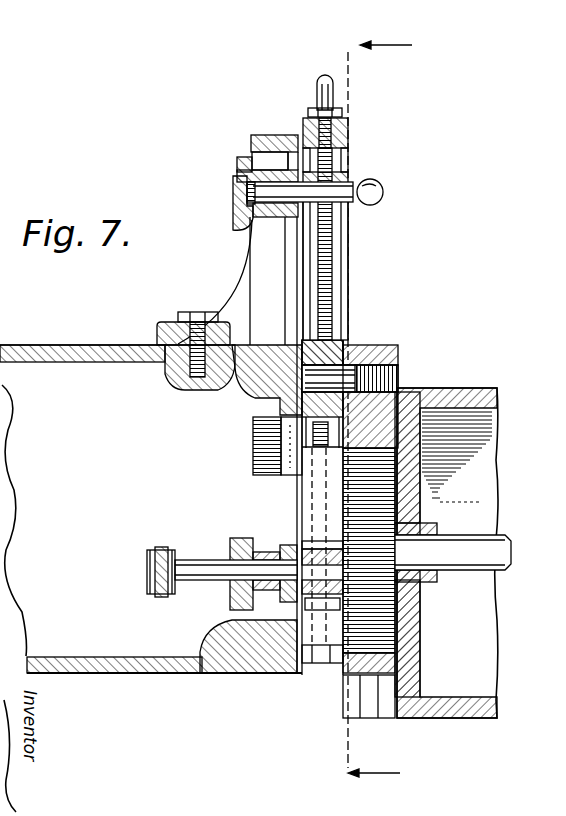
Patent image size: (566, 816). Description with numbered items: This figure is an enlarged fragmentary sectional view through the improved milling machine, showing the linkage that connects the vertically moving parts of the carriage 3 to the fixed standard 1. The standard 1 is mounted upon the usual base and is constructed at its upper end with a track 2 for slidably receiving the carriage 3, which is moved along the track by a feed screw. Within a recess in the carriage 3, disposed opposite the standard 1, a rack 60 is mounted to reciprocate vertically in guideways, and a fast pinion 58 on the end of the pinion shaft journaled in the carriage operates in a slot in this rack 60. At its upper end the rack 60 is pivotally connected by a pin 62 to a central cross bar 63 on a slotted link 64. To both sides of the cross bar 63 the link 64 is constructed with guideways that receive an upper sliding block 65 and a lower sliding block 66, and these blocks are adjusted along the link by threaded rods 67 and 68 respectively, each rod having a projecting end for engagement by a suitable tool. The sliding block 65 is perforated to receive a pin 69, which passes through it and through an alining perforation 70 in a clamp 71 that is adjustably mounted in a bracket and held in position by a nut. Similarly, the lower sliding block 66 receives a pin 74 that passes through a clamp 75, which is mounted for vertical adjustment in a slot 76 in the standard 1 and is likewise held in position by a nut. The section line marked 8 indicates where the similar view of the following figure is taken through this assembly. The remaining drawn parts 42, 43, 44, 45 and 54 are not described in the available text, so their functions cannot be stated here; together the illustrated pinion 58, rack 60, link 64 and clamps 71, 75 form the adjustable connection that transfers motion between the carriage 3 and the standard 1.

The standard 1 is at (14, 348).
The track 2 is at (266, 390).
The carriage 3 is at (490, 390).
The section line 8 is at (371, 415).
The block 42 is at (258, 137).
The block 43 is at (237, 163).
The boss 44 is at (230, 600).
The collar 45 is at (262, 562).
The shaft 54 is at (505, 540).
The pinion 58 is at (395, 594).
The rack 60 is at (370, 345).
The pin 62 is at (400, 368).
The cross bar 63 is at (350, 336).
The slotted link 64 is at (352, 132).
The sliding block 65 is at (352, 178).
The sliding block 66 is at (310, 540).
The threaded rod 67 is at (333, 282).
The threaded rod 68 is at (300, 440).
The pin 69 is at (376, 202).
The perforation 70 is at (250, 216).
The clamp 71 is at (236, 192).
The pin 74 is at (175, 560).
The clamp 75 is at (236, 570).
The slot 76 is at (253, 462).